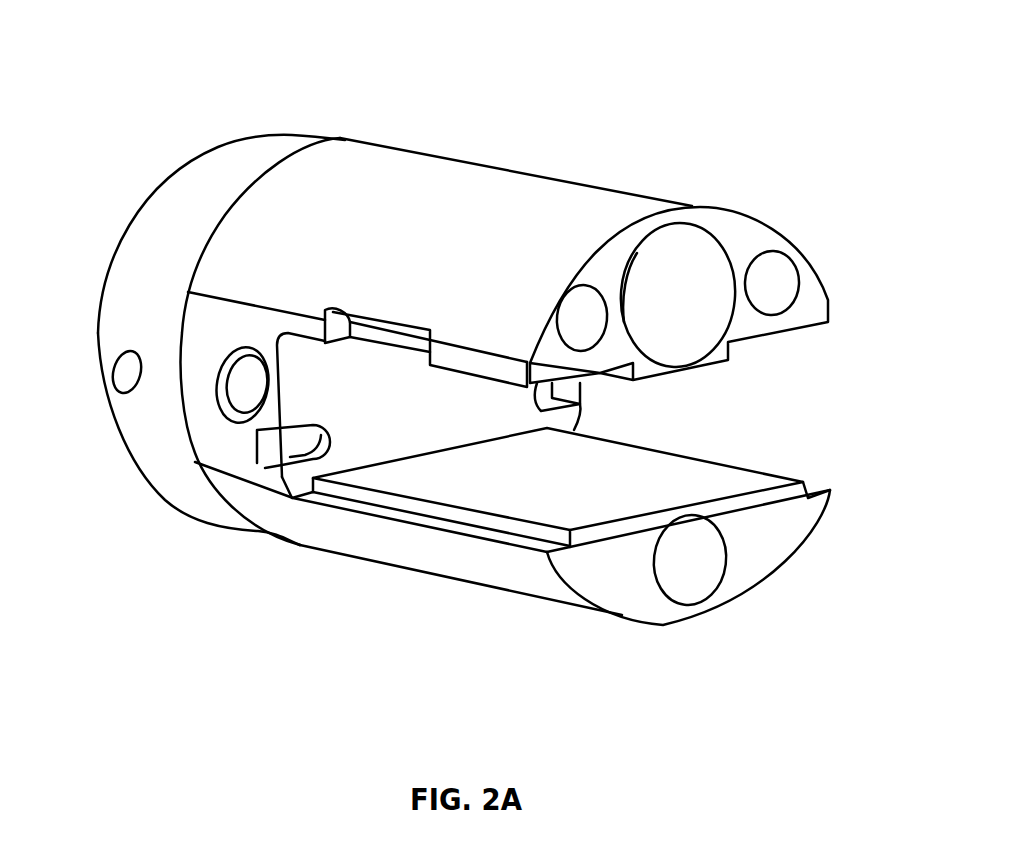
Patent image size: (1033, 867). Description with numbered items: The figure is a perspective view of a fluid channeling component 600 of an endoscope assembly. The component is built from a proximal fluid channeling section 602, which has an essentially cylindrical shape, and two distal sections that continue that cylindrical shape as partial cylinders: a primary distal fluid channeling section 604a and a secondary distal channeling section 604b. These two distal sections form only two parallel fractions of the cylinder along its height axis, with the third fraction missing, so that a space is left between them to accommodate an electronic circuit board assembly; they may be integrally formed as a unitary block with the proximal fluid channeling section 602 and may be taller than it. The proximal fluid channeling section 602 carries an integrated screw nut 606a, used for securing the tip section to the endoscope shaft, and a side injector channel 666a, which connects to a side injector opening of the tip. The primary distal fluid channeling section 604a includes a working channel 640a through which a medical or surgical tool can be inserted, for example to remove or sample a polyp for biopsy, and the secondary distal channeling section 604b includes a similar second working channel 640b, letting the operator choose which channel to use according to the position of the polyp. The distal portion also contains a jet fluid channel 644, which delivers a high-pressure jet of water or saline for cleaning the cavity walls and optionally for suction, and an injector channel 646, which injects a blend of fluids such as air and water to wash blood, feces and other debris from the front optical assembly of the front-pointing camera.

The fluid channeling component 600 is at (728, 50).
The proximal fluid channeling section 602 is at (158, 210).
The primary distal fluid channeling section 604a is at (418, 212).
The secondary distal channeling section 604b is at (387, 537).
The integrated screw nut 606a is at (113, 367).
The working channel 640a is at (678, 223).
The second working channel 640b is at (722, 575).
The jet fluid channel 644 is at (587, 285).
The injector channel 646 is at (772, 251).
The side injector channel 666a is at (216, 383).